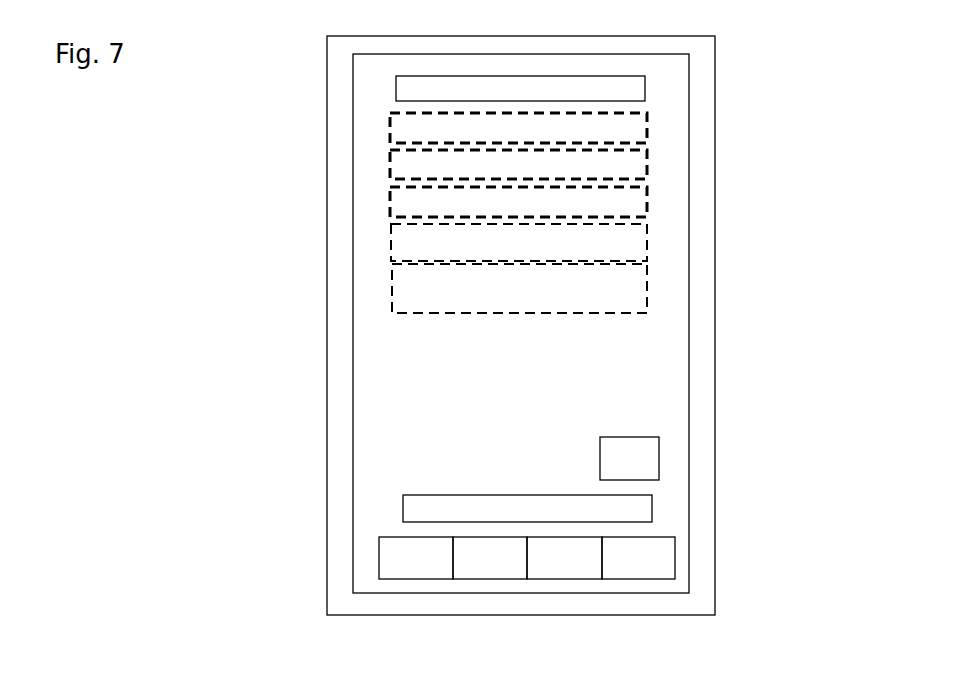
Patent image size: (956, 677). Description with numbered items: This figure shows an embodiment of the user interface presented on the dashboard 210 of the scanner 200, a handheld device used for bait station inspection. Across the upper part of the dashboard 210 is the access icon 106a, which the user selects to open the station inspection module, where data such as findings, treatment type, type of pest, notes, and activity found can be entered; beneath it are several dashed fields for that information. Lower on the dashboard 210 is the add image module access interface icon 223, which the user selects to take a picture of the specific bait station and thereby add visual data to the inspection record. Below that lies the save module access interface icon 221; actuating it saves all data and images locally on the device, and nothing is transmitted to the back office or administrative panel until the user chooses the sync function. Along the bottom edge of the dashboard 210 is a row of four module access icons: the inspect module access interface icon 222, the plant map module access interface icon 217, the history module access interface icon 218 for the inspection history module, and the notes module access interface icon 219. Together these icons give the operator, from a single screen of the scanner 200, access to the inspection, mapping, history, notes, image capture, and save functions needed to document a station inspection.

The access icon 106a is at (618, 86).
The scanner 200 is at (700, 216).
The dashboard 210 is at (603, 367).
The add image module access interface icon 223 is at (628, 459).
The save module access interface icon 221 is at (618, 507).
The inspect module access interface icon 222 is at (412, 565).
The plant map module access interface icon 217 is at (487, 565).
The history module access interface icon 218 is at (558, 565).
The notes module access interface icon 219 is at (632, 565).